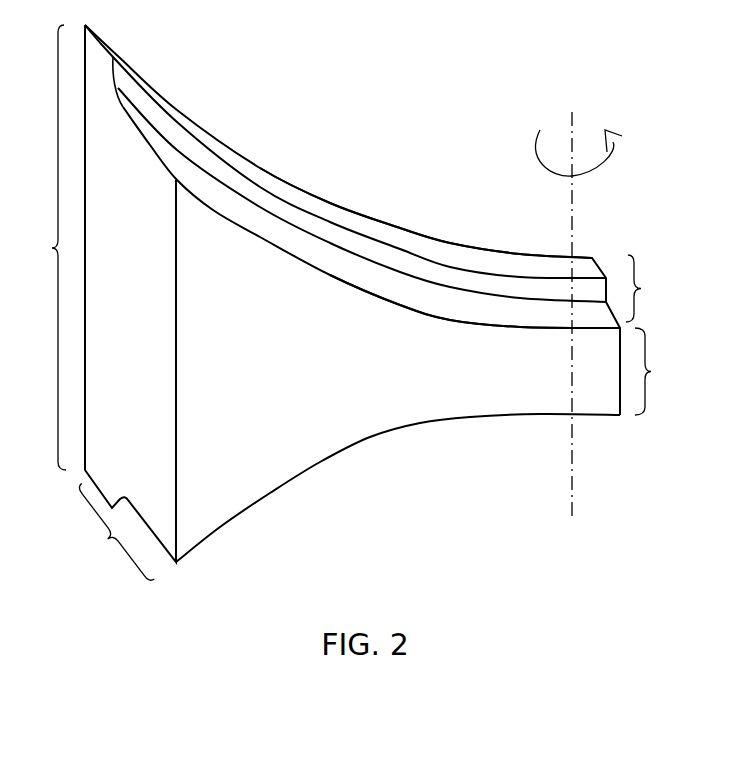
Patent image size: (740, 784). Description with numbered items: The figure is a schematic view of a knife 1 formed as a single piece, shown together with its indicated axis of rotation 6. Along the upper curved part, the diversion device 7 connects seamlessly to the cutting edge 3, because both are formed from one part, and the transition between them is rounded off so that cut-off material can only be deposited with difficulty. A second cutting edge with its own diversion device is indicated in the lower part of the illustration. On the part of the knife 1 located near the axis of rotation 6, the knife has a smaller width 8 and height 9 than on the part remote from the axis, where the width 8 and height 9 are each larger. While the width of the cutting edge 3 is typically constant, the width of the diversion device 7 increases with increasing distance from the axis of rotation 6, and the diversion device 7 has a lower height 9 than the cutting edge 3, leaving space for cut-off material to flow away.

The knife 1 is at (302, 84).
The cutting edge 3 is at (393, 233).
The axis of rotation 6 is at (579, 303).
The diversion device 7 is at (448, 306).
The width 8 is at (363, 421).
The height 9 is at (350, 247).